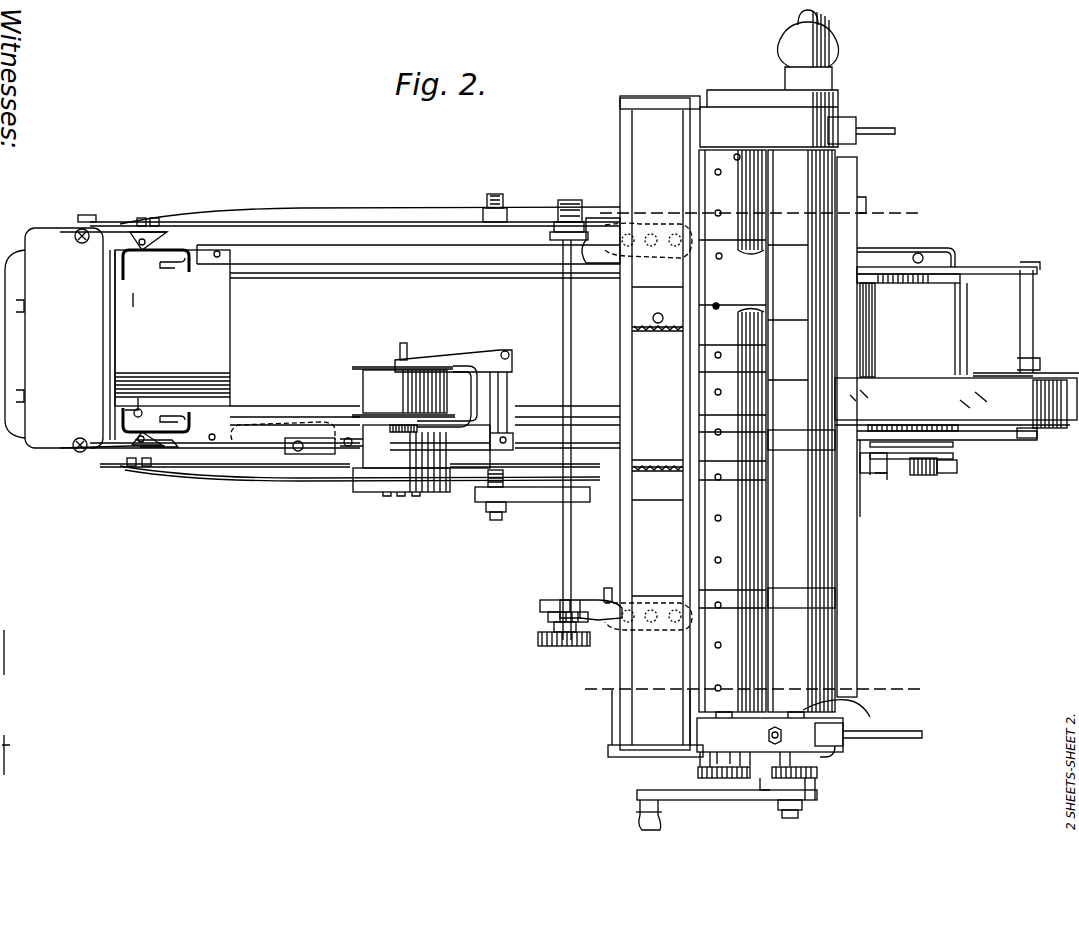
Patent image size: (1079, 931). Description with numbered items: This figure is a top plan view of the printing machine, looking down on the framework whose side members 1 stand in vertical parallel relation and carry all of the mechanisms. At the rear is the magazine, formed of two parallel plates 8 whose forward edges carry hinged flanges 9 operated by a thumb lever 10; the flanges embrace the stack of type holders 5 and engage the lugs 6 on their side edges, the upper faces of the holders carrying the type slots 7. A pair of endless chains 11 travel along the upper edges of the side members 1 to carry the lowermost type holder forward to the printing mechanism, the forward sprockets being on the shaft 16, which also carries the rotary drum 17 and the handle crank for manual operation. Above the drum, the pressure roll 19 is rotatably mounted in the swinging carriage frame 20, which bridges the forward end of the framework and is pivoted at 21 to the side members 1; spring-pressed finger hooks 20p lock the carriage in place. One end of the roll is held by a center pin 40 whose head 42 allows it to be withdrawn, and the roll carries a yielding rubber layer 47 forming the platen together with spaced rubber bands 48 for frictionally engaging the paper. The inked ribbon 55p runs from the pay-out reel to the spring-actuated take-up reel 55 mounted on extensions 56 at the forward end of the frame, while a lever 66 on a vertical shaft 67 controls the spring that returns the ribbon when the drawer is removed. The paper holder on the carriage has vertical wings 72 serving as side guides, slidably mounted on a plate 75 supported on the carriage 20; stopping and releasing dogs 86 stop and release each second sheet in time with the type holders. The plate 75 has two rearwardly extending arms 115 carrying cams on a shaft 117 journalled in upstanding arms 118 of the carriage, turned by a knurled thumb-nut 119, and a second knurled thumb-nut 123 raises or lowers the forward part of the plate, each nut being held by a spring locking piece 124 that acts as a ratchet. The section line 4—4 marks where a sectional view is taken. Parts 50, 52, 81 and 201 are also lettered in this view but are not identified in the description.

The side members 1 is at (315, 216).
The type holders 5 is at (912, 194).
The lugs 6 is at (172, 445).
The type slots 7 is at (178, 383).
The plates 8 is at (160, 258).
The flanges 9 is at (188, 262).
The thumb lever 10 is at (75, 235).
The endless chains 11 is at (726, 810).
The shaft 16 is at (790, 816).
The rotary drum 17 is at (870, 332).
The pressure roll 19 is at (817, 431).
The carriage frame 20 is at (624, 748).
The spring-pressed finger hooks 20p is at (885, 130).
The pivot 21 is at (494, 512).
The center pin 40 is at (870, 717).
The head 42 is at (815, 780).
The layer of yielding substance 47 is at (793, 408).
The rubber bands 48 is at (795, 445).
The bracket 50 is at (908, 276).
The bolt 52 is at (903, 465).
The take-up reel 55 is at (355, 376).
The ribbon 55p is at (903, 384).
The extensions 56 is at (1022, 440).
The lever 66 is at (270, 445).
The vertical shaft 67 is at (318, 455).
The vertical wings 72 is at (651, 404).
The plate 75 is at (612, 703).
The column 81 is at (725, 193).
The stopping and releasing dogs 86 is at (716, 305).
The arms 115 is at (604, 240).
The shaft 117 is at (562, 300).
The upstanding arms 118 is at (600, 630).
The knurled thumb-nut 119 is at (560, 645).
The knurled thumb-nut 123 is at (700, 772).
The spring locking piece 124 is at (700, 760).
The washer 201 is at (746, 790).
The section line 4— 4 is at (595, 688).